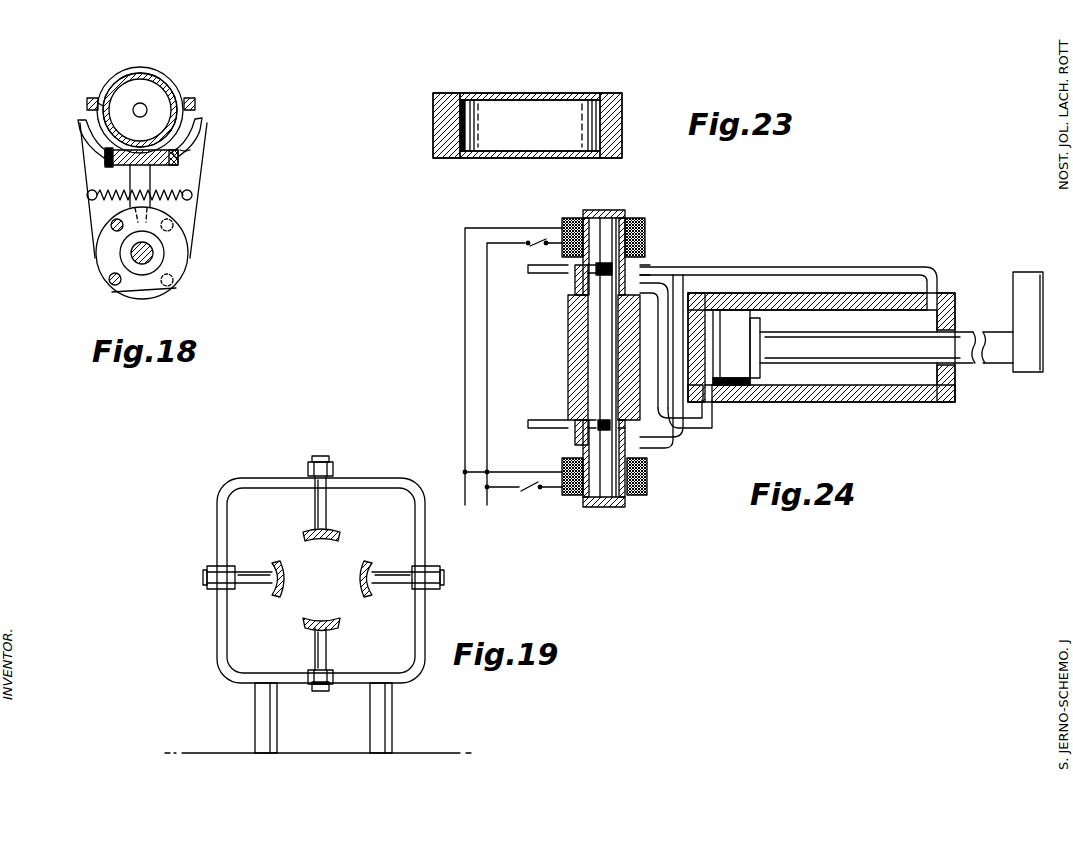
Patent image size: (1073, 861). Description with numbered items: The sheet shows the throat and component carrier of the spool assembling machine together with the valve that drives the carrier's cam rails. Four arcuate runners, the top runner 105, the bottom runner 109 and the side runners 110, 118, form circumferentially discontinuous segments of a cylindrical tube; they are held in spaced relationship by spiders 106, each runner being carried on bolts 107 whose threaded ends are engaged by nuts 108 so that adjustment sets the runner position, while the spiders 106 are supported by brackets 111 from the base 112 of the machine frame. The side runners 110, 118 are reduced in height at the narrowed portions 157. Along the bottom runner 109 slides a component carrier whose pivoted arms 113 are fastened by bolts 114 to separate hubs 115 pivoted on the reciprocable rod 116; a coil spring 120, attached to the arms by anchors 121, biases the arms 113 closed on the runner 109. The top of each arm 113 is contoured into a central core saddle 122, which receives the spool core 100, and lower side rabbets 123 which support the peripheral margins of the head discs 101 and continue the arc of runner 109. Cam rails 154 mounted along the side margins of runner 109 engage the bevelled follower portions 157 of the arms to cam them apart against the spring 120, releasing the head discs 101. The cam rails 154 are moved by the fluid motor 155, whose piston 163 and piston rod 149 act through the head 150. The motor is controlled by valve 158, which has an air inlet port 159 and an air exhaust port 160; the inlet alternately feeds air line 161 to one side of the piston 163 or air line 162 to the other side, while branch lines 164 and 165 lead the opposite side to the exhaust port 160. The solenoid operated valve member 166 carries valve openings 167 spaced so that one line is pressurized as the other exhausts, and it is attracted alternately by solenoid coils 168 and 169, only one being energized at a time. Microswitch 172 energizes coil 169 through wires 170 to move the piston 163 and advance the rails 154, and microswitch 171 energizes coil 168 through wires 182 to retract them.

In FIG. 18, the cutting wheel / ring 100 is at (162, 88).
In FIG. 23, the cutting wheel / ring 100 is at (463, 116).
In FIG. 18, the head discs 101 is at (138, 68).
In FIG. 23, the head discs 101 is at (502, 100).
In FIG. 19, the top runner 105 is at (322, 540).
In FIG. 19, the spiders 106 is at (397, 486).
In FIG. 19, the bolts 107 is at (314, 512).
In FIG. 19, the nuts 108 is at (330, 488).
In FIG. 18, the bottom runner 109 is at (135, 165).
In FIG. 19, the bottom runner 109 is at (322, 618).
In FIG. 18, the side runner 110 is at (194, 100).
In FIG. 19, the side runner 110 is at (281, 579).
In FIG. 19, the brackets 111 is at (372, 727).
In FIG. 19, the base 112 is at (420, 756).
In FIG. 18, the pivoted arms 113 is at (100, 212).
In FIG. 23, the pivoted arms 113 is at (434, 140).
In FIG. 18, the bolts 114 is at (111, 227).
In FIG. 18, the hubs 115 is at (108, 264).
In FIG. 18, the reciprocable rod 116 is at (131, 253).
In FIG. 18, the side runner 118 is at (87, 101).
In FIG. 19, the side runner 118 is at (365, 580).
In FIG. 18, the coil spring 120 is at (178, 206).
In FIG. 18, the anchors 121 is at (87, 194).
In FIG. 18, the central core saddle 122 is at (88, 130).
In FIG. 23, the central core saddle 122 is at (447, 122).
In FIG. 18, the side head disc support rabbets 123 is at (95, 140).
In FIG. 23, the side head disc support rabbets 123 is at (433, 98).
In FIG. 24, the piston rod 149 is at (967, 340).
In FIG. 24, the head 150 is at (1025, 290).
In FIG. 18, the cam rails 154 is at (105, 160).
In FIG. 24, the fluid motor 155 is at (883, 397).
In FIG. 18, the narrowed portions / cam follower portions 157 is at (86, 105).
In FIG. 24, the valve 158 is at (562, 359).
In FIG. 24, the air inlet port 159 is at (560, 270).
In FIG. 24, the air exhaust port 160 is at (540, 426).
In FIG. 24, the air line 161 is at (744, 268).
In FIG. 24, the air line 162 is at (695, 427).
In FIG. 24, the piston 163 is at (742, 388).
In FIG. 24, the air line 164 is at (676, 289).
In FIG. 24, the air line 165 is at (636, 428).
In FIG. 24, the valve member 166 is at (600, 333).
In FIG. 24, the valve openings 167 is at (602, 428).
In FIG. 24, the solenoid coil 168 is at (570, 218).
In FIG. 24, the solenoid coil 169 is at (575, 497).
In FIG. 24, the wires 170 is at (505, 483).
In FIG. 24, the microswitch 171 is at (538, 240).
In FIG. 24, the microswitch 172 is at (531, 488).
In FIG. 24, the wires 182 is at (490, 243).